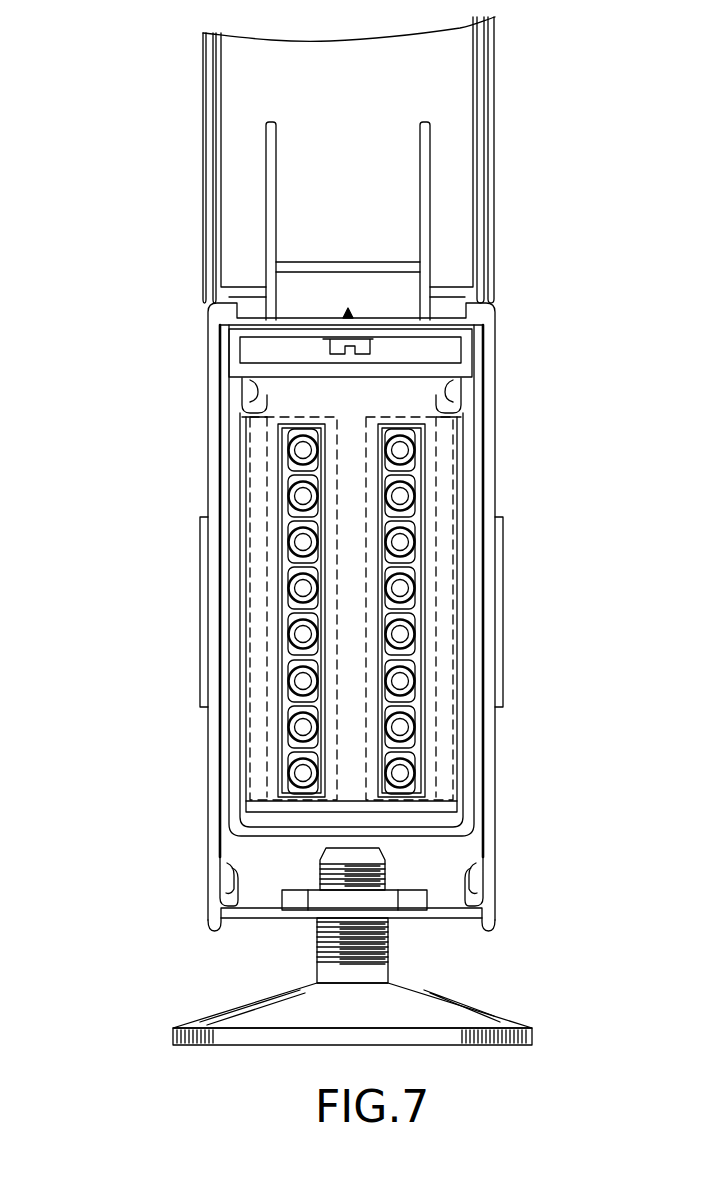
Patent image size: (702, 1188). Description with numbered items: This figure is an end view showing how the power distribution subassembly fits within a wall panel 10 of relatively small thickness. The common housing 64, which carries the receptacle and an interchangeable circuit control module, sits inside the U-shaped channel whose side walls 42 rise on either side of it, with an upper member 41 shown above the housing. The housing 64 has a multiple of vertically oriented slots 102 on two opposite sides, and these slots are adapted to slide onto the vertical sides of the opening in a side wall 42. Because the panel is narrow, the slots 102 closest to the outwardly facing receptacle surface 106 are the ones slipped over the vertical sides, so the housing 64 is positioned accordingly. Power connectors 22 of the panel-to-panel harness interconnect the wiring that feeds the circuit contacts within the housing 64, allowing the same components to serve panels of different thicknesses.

The panel 10 is at (164, 149).
The power connectors 22 is at (352, 797).
The upper housing member 41 is at (209, 373).
The side walls 42 is at (275, 837).
The common housing 64 is at (233, 838).
The vertically oriented slots 102 is at (260, 518).
The outwardly facing receptacle surface 106 is at (200, 670).